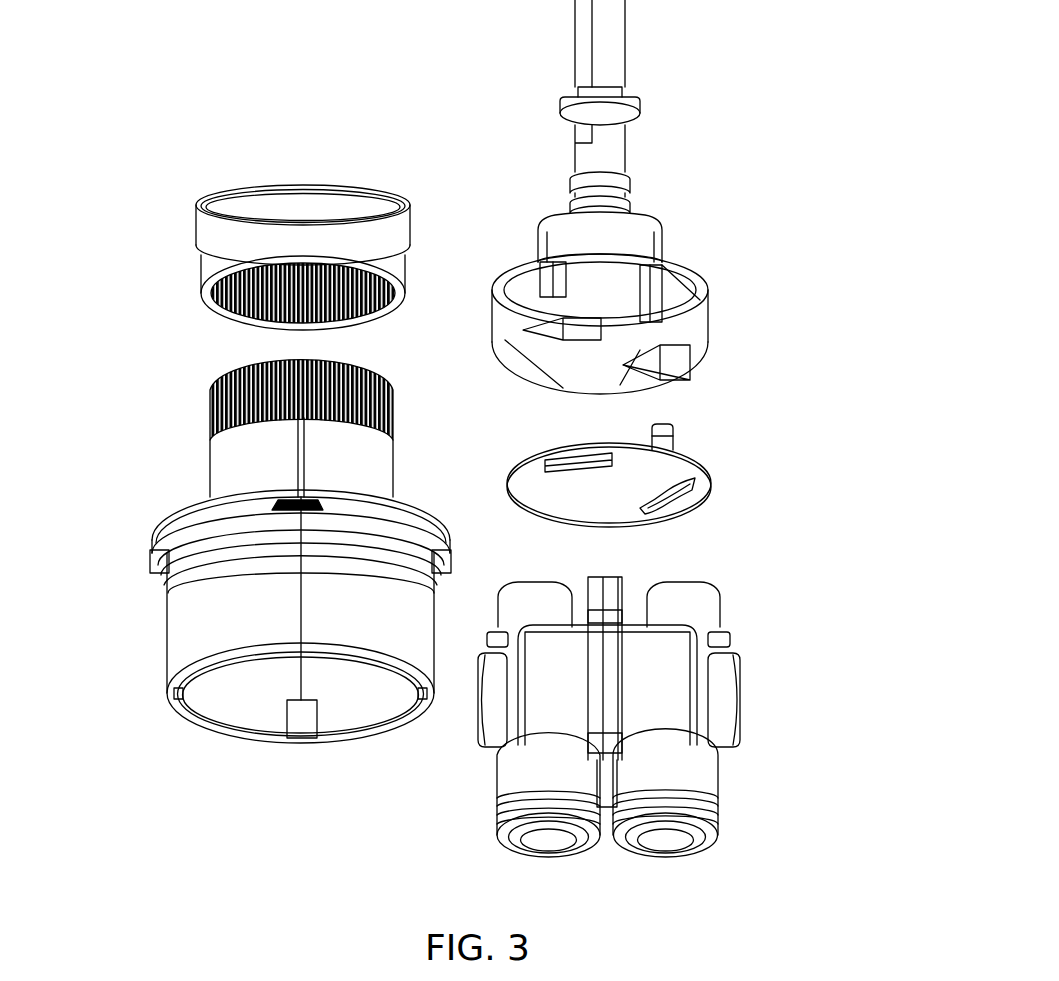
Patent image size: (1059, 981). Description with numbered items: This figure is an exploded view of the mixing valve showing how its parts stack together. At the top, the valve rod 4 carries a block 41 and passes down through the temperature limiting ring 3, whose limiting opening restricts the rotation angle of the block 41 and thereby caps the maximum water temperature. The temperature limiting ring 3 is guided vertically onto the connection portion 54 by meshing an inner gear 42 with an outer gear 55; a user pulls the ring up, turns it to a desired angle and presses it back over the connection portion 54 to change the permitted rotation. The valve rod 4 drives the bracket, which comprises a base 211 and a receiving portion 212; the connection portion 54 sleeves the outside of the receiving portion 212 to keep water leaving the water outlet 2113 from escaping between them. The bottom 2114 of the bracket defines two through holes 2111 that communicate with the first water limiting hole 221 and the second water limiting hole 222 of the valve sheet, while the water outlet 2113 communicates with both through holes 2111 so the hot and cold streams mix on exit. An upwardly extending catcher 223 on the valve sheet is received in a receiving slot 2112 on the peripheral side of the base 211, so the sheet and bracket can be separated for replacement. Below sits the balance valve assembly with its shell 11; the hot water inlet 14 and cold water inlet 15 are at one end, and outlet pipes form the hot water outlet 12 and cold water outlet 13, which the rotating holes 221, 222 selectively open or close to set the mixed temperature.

The temperature limiting ring 3 is at (272, 213).
The valve rod 4 is at (605, 45).
The block 41 is at (636, 100).
The inner gear 42 is at (248, 268).
The connection portion 54 is at (258, 513).
The outer gear 55 is at (213, 387).
The receiving portion 212 is at (605, 235).
The base 211 is at (598, 298).
The through holes 2111 is at (662, 352).
The receiving slot 2112 is at (662, 298).
The water outlet 2113 is at (573, 285).
The bottom 2114 is at (548, 388).
The first water limiting hole 221 is at (562, 455).
The second water limiting hole 222 is at (692, 492).
The catcher 223 is at (672, 437).
The shell 11 is at (621, 698).
The hot water outlet 12 is at (540, 585).
The cold water outlet 13 is at (685, 600).
The hot water inlet 14 is at (540, 840).
The cold water inlet 15 is at (675, 840).